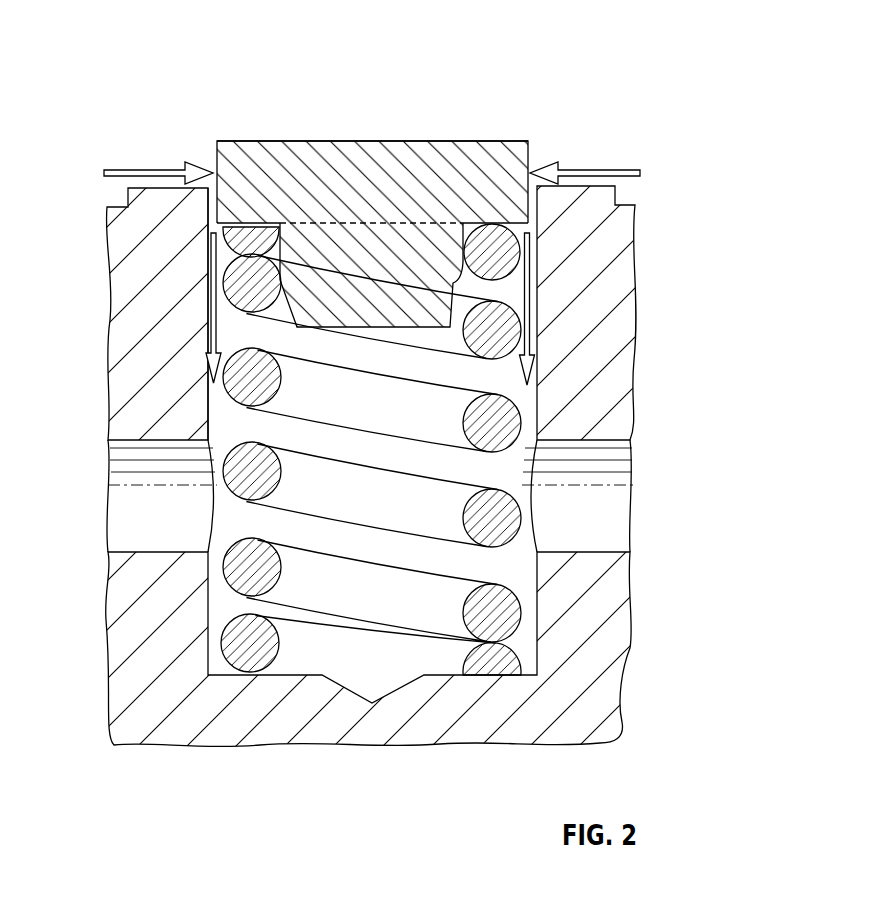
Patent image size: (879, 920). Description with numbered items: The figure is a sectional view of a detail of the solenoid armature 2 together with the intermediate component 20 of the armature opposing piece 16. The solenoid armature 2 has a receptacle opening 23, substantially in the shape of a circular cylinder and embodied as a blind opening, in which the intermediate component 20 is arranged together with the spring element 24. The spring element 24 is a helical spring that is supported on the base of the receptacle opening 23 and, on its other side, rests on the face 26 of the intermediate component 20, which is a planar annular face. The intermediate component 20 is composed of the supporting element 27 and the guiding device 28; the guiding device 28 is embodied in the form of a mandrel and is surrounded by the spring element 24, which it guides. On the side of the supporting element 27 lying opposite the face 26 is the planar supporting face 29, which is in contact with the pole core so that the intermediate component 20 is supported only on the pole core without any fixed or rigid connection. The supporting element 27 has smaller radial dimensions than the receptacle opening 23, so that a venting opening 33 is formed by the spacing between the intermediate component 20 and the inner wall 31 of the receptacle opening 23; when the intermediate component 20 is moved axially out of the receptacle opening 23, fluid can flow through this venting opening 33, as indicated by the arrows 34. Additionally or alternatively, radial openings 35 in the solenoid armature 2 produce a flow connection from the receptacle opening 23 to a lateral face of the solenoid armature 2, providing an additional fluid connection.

The solenoid armature 2 is at (600, 339).
The armature opposing piece 16 is at (541, 116).
The intermediate component 20 is at (364, 141).
The receptacle opening 23 is at (221, 402).
The spring element 24 is at (510, 417).
The face 26 is at (505, 238).
The supporting element 27 is at (474, 148).
The guiding device 28 is at (415, 262).
The supporting face 29 is at (298, 140).
The inner wall 31 is at (209, 338).
The venting opening 33 is at (213, 205).
The arrows 34 is at (140, 166).
The radial openings 35 is at (130, 497).